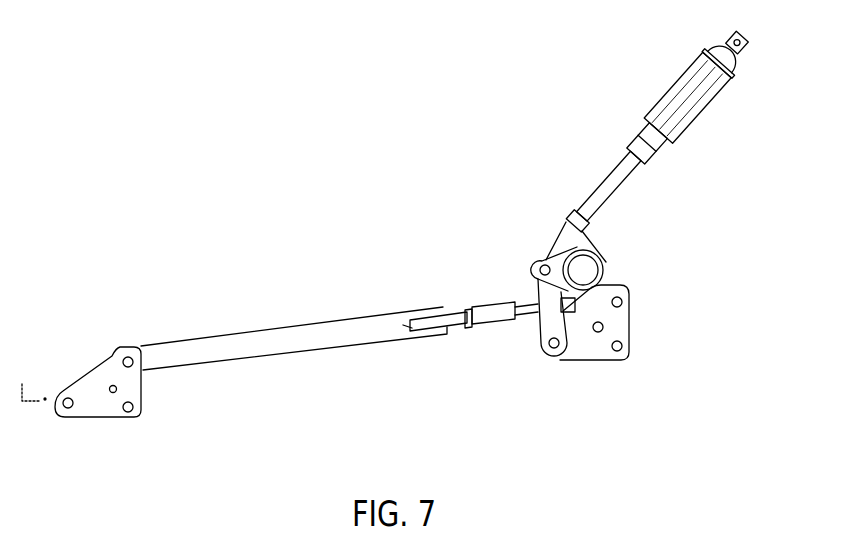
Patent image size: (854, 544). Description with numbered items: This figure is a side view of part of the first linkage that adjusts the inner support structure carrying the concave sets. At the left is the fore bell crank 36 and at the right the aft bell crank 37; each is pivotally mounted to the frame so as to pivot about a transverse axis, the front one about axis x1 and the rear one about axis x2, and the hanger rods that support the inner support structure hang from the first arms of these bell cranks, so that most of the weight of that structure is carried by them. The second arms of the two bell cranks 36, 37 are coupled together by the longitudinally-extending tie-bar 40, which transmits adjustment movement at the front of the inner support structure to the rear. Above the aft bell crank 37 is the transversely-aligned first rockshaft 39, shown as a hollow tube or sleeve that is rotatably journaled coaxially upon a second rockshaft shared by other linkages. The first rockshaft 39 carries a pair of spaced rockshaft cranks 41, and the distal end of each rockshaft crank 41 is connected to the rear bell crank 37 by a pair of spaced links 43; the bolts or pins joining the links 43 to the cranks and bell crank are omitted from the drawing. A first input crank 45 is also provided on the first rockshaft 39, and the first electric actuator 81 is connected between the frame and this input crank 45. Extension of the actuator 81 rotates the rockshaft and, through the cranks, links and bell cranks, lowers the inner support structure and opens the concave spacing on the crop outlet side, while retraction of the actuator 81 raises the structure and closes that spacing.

The bell crank 36 is at (88, 378).
The bell crank 37 is at (566, 360).
The first rockshaft 39 is at (604, 271).
The tie-bar 40 is at (315, 333).
The rockshaft crank 41 is at (552, 256).
The link 43 is at (550, 322).
The first input crank 45 is at (593, 235).
The first electric actuator 81 is at (648, 153).
The transverse axis x1 is at (112, 393).
The transverse axis x2 is at (598, 332).